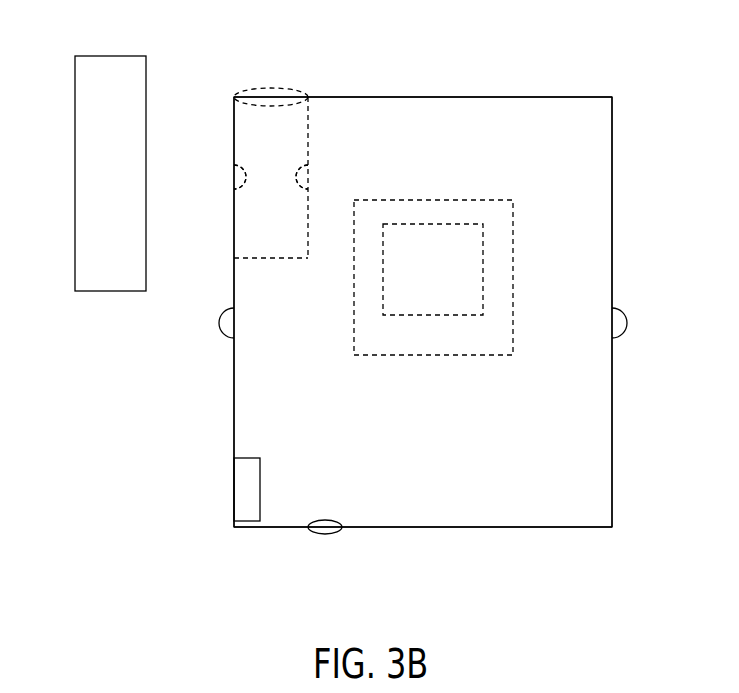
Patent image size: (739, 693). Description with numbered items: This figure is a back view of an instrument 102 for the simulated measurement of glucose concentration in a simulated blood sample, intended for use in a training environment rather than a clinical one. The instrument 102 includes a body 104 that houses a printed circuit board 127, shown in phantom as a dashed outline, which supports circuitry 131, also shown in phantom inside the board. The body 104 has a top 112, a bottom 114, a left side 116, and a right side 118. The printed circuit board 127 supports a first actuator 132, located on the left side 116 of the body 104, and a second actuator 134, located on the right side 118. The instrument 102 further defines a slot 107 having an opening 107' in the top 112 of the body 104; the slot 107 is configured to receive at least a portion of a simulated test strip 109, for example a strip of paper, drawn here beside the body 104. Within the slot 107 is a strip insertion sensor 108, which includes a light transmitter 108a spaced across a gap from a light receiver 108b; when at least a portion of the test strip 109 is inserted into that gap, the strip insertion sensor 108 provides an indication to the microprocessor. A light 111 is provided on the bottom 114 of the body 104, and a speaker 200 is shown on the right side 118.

The instrument 102 is at (612, 76).
The body 104 is at (622, 213).
The slot 107 is at (279, 149).
The opening 107' is at (279, 54).
The strip insertion sensor 108 is at (297, 168).
The light transmitter 108a is at (310, 184).
The light receiver 108b is at (240, 179).
The simulated test strip 109 is at (75, 172).
The light 111 is at (330, 533).
The top 112 is at (426, 88).
The bottom 114 is at (420, 538).
The left side 116 is at (624, 394).
The right side 118 is at (224, 381).
The printed circuit board 127 is at (515, 234).
The circuitry 131 is at (483, 277).
The first actuator 132 is at (628, 322).
The second actuator 134 is at (220, 321).
The speaker 200 is at (234, 490).